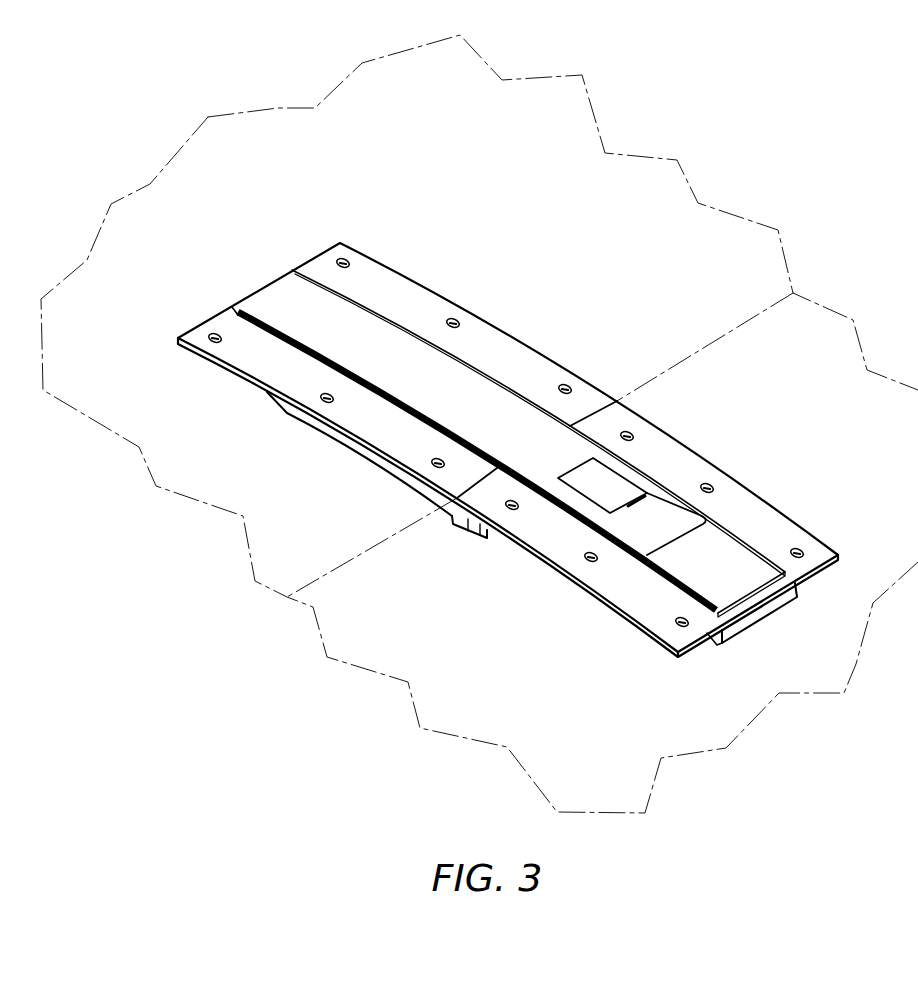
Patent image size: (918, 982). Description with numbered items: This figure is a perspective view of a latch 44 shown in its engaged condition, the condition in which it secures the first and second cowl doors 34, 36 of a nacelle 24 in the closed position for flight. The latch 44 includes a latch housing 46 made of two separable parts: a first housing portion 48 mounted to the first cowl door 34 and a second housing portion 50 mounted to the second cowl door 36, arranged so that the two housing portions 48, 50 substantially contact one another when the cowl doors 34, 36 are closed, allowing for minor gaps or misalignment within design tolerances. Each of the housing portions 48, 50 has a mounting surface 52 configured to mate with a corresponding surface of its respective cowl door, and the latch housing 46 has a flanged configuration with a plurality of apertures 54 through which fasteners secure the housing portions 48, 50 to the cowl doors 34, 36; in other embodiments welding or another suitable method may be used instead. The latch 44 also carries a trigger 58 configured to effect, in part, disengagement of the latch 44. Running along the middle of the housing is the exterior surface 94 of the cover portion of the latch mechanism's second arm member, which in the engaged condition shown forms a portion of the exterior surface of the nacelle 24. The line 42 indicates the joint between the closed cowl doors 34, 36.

The nacelle 24 is at (647, 113).
The first cowl door 34 is at (173, 441).
The second cowl door 36 is at (484, 691).
The skin joint line 42 is at (723, 337).
The latch 44 is at (264, 269).
The latch housing 46 is at (438, 286).
The first housing portion 48 is at (522, 358).
The second housing portion 50 is at (627, 592).
The mounting surface 52 is at (390, 432).
The apertures 54 is at (513, 507).
The trigger 58 is at (615, 490).
The exterior surface 94 is at (352, 330).